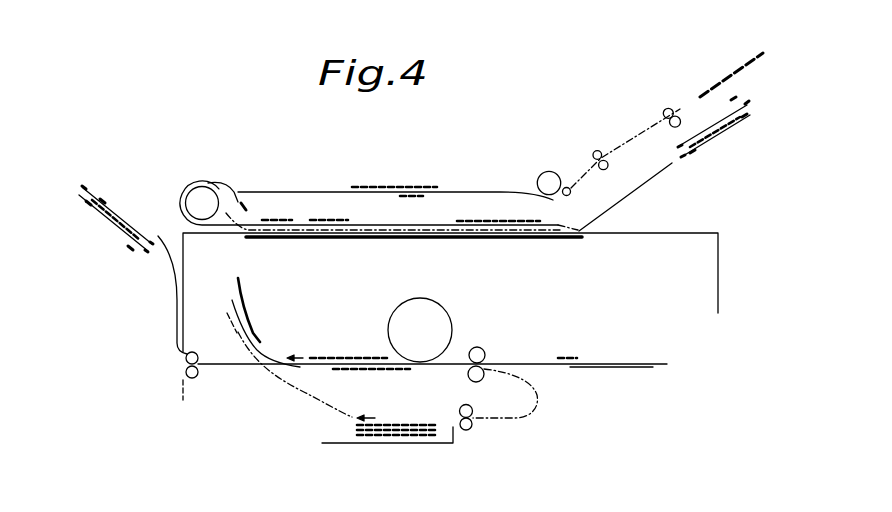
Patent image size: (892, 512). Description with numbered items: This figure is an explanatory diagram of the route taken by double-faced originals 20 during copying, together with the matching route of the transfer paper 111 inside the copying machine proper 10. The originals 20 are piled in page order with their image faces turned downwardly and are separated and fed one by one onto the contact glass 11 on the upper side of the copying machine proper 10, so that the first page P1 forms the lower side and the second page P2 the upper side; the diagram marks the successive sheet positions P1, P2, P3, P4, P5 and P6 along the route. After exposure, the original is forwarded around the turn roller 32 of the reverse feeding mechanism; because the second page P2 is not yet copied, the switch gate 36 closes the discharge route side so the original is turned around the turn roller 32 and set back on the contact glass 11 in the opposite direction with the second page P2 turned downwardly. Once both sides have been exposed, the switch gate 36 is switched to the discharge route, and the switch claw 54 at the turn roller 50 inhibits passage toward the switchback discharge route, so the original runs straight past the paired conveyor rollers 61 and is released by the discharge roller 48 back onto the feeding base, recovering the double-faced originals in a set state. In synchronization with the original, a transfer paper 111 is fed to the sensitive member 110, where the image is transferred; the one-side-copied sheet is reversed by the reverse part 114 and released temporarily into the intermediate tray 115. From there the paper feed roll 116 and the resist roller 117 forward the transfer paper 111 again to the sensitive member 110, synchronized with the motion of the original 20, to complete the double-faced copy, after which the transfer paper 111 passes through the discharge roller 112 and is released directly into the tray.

The copying machine proper 10 is at (720, 297).
The contact glass 11 is at (535, 240).
The originals 20 is at (733, 72).
The turn roller 32 is at (194, 197).
The switch gate 36 is at (235, 186).
The discharge roller 48 is at (664, 110).
The turn roller 50 is at (547, 178).
The switch claw 54 is at (565, 187).
The paired conveyor rollers 61 is at (607, 151).
The sensitive member 110 is at (443, 308).
The transfer paper 111 is at (112, 232).
The discharge roller 112 is at (186, 371).
The reverse part 114 is at (250, 313).
The intermediate tray 115 is at (377, 445).
The paper feed roll 116 is at (472, 429).
The resist roller 117 is at (483, 348).
The first page P1 is at (133, 247).
The second page P2 is at (88, 203).
The sheet position P3 is at (147, 253).
The sheet position P4 is at (83, 190).
The sheet position P5 is at (152, 243).
The sheet position P6 is at (103, 200).